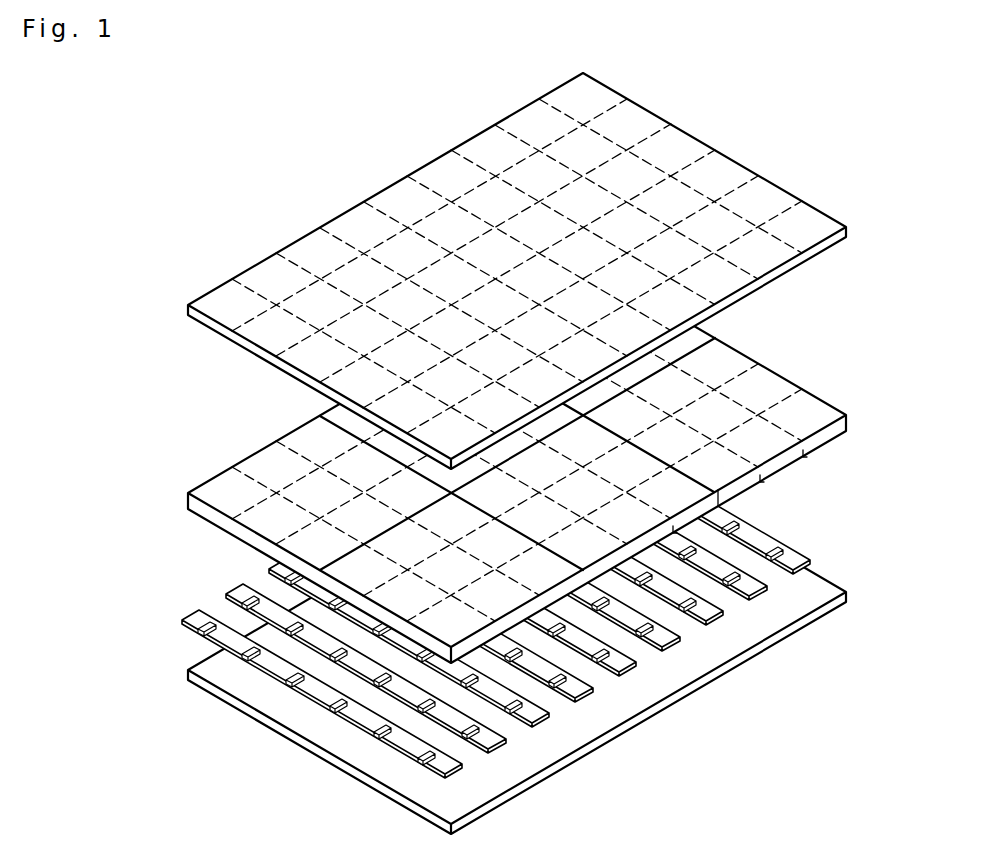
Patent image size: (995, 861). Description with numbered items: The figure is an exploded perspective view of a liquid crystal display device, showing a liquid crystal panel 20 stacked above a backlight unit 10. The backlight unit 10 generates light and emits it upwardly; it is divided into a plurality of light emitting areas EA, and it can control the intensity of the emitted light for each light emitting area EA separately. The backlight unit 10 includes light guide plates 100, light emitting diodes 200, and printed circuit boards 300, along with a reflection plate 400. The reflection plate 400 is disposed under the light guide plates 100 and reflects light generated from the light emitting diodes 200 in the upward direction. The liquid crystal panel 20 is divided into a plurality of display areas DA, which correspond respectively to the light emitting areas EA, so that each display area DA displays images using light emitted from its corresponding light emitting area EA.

The backlight unit 10 is at (75, 655).
The liquid crystal panel 20 is at (528, 271).
The light guide plates 100 is at (463, 462).
The light emitting diodes 200 is at (197, 637).
The printed circuit boards 300 is at (193, 617).
The reflection plate 400 is at (197, 667).
The display areas DA is at (218, 300).
The light emitting areas EA is at (218, 488).